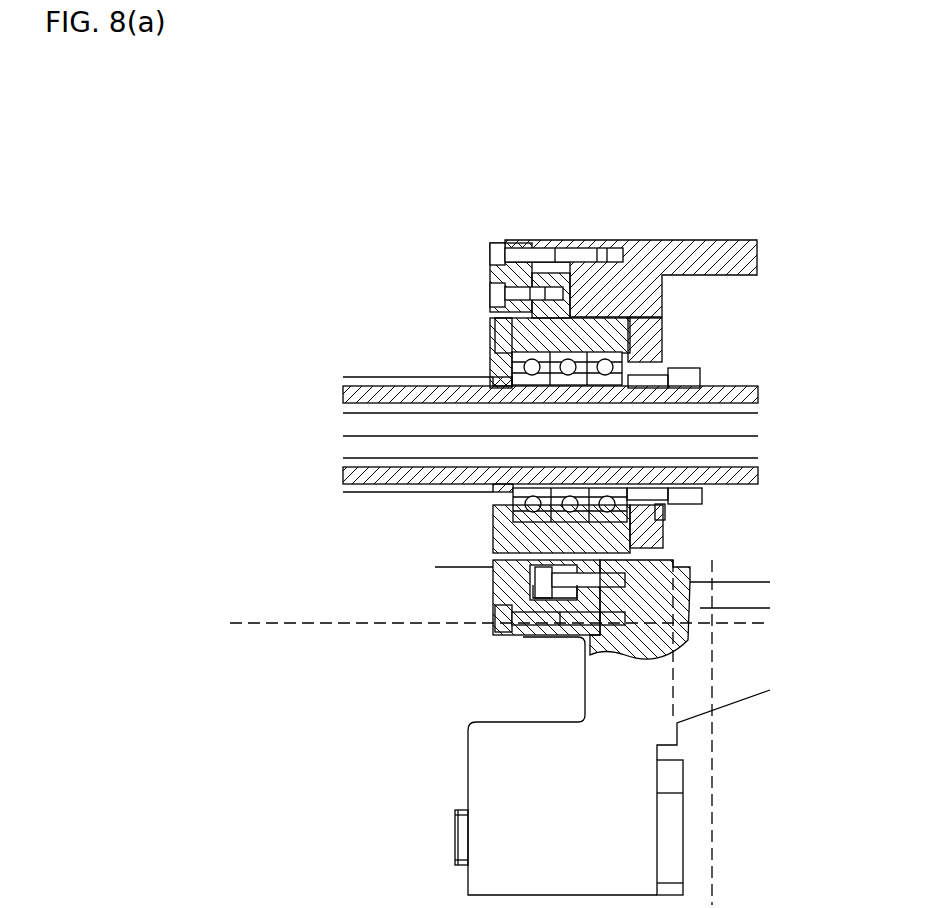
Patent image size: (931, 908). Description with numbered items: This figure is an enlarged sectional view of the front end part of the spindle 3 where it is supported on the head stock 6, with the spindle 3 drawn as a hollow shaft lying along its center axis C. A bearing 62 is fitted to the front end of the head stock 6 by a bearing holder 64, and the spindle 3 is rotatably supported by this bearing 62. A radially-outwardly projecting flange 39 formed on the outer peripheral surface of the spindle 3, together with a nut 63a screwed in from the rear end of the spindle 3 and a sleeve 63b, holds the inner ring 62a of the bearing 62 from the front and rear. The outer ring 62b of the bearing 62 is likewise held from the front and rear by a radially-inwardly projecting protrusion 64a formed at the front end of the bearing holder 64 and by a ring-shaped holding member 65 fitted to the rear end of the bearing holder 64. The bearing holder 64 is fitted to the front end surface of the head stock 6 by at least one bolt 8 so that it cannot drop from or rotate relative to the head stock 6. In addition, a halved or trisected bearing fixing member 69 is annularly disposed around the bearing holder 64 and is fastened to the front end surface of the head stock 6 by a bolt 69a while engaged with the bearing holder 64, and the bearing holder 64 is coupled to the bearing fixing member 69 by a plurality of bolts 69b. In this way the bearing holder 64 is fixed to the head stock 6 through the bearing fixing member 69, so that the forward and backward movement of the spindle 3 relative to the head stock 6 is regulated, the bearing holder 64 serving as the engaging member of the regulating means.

The spindle 3 is at (370, 377).
The head stock 6 is at (709, 239).
The bolt 8 is at (598, 572).
The flange 39 is at (493, 497).
The bearing 62 is at (578, 348).
The inner ring 62a is at (493, 586).
The outer ring 62b is at (505, 242).
The nut 63a is at (690, 498).
The sleeve 63b is at (665, 515).
The bearing holder 64 is at (492, 529).
The protrusion 64a is at (490, 360).
The holding member 65 is at (658, 328).
The bearing fixing member 69 is at (537, 240).
The bolt 69a is at (570, 244).
The bolts 69b is at (490, 293).
The center axis C is at (753, 436).